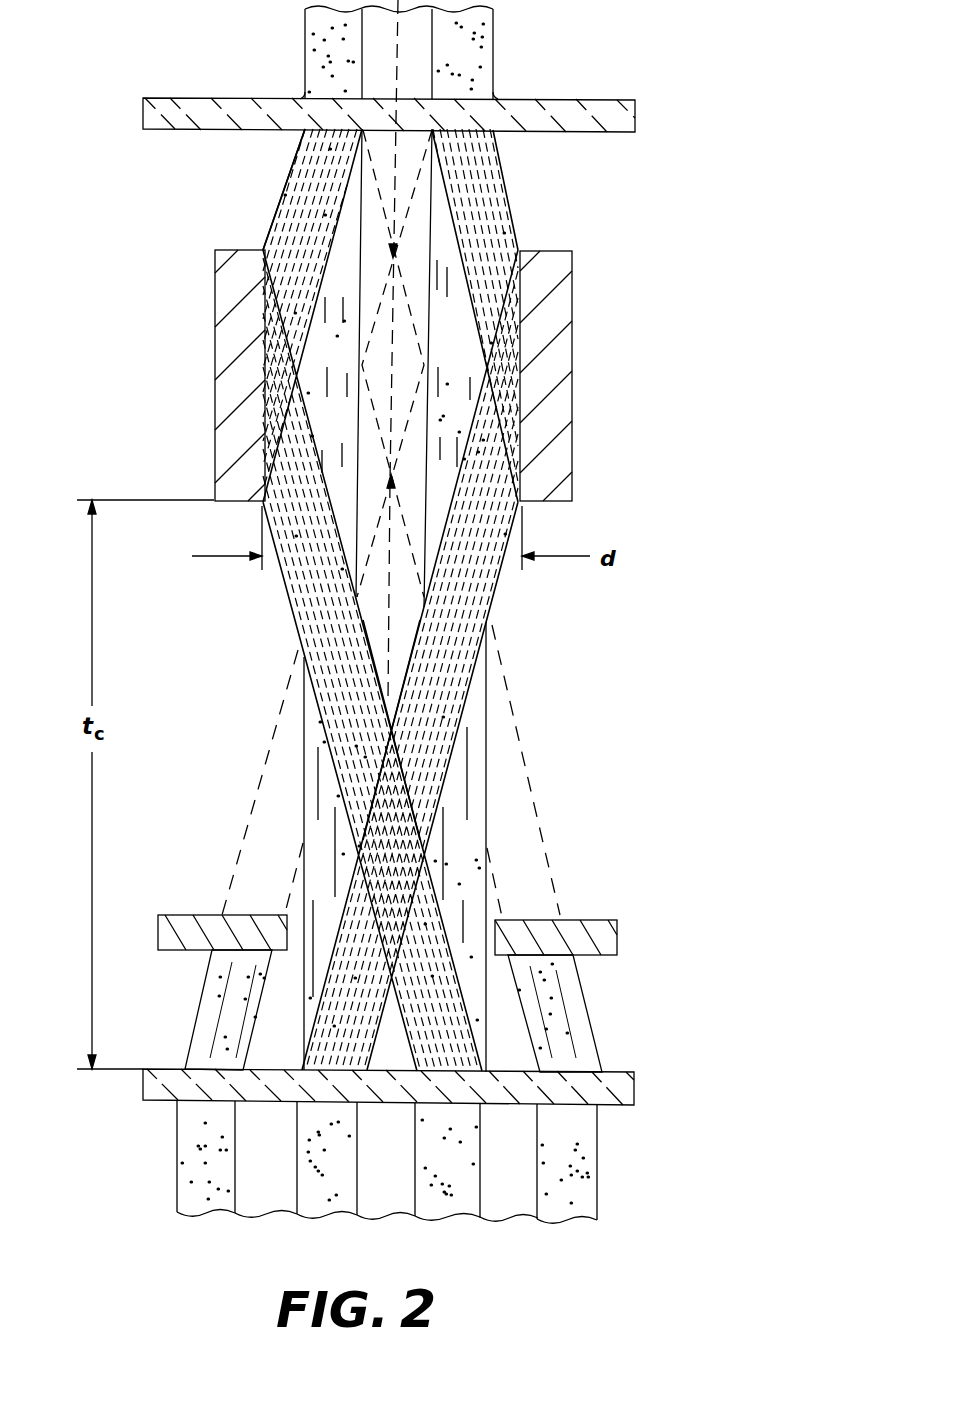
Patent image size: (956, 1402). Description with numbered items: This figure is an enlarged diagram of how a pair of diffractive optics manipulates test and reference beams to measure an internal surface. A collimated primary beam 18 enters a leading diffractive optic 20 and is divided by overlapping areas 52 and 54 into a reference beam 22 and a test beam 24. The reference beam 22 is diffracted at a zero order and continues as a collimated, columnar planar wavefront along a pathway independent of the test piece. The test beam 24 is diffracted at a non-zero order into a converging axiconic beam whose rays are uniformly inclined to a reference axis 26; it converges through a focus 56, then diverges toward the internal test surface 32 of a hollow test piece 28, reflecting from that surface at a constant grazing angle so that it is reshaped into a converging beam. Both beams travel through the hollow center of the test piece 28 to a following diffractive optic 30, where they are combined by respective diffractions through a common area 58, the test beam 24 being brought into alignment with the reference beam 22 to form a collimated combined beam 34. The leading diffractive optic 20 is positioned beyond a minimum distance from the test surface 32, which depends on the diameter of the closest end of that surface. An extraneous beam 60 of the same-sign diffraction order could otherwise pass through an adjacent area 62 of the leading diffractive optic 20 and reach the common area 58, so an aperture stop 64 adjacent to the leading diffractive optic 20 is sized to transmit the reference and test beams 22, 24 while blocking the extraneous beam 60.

The primary beam 18 is at (283, 1185).
The leading diffractive optic 20 is at (142, 1082).
The reference beam 22 is at (307, 780).
The test beam 24 is at (502, 193).
The reference axis 26 is at (390, 628).
The test piece 28 is at (558, 448).
The following diffractive optic 30 is at (148, 117).
The internal test surface 32 is at (287, 240).
The combined beam 34 is at (315, 40).
The overlapping area 52 is at (297, 1107).
The overlapping area 54 is at (434, 1108).
The focus 56 is at (360, 853).
The common area 58 is at (312, 97).
The extraneous beam 60 is at (203, 1027).
The adjacent area 62 is at (198, 1107).
The aperture stop 64 is at (590, 920).